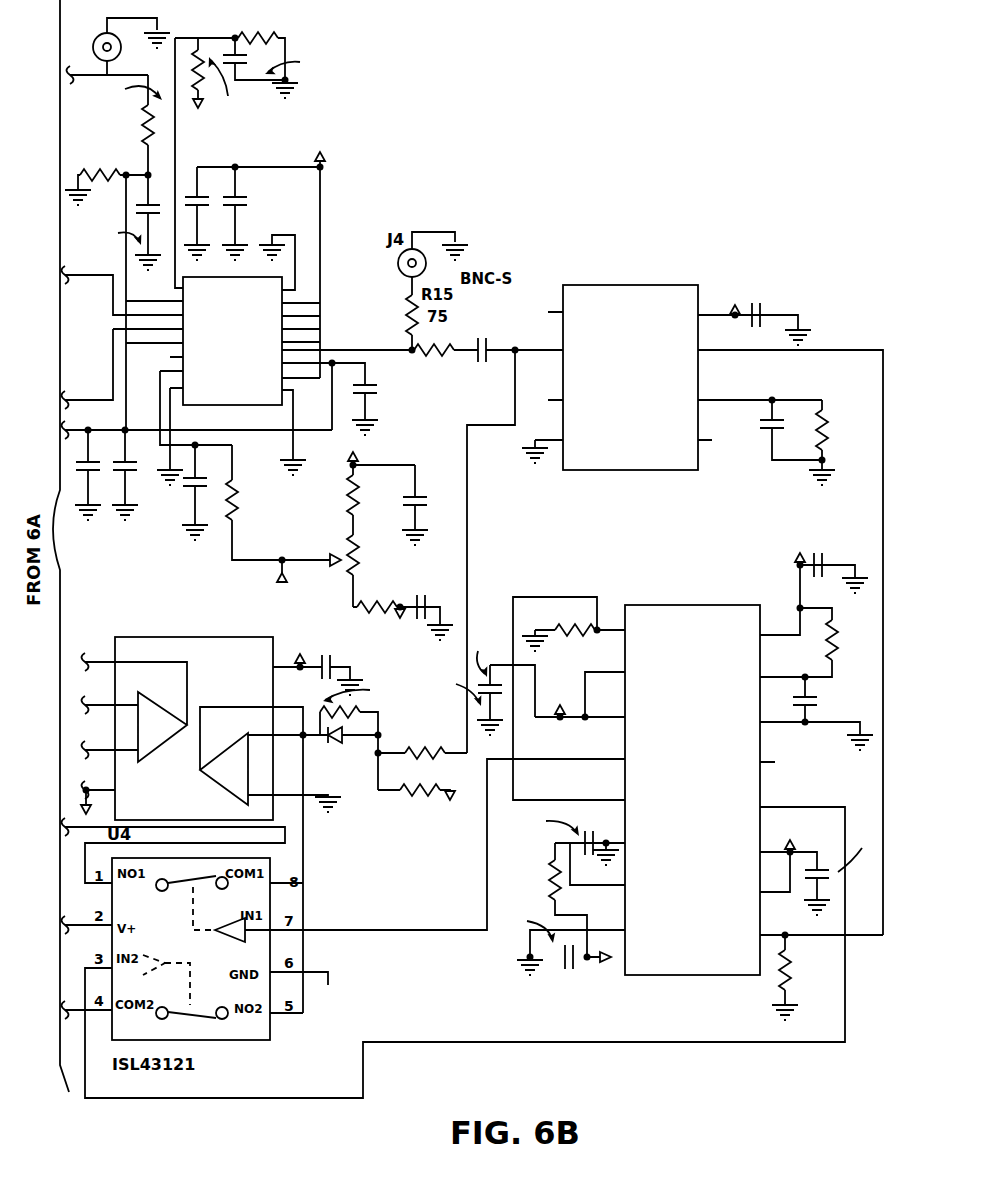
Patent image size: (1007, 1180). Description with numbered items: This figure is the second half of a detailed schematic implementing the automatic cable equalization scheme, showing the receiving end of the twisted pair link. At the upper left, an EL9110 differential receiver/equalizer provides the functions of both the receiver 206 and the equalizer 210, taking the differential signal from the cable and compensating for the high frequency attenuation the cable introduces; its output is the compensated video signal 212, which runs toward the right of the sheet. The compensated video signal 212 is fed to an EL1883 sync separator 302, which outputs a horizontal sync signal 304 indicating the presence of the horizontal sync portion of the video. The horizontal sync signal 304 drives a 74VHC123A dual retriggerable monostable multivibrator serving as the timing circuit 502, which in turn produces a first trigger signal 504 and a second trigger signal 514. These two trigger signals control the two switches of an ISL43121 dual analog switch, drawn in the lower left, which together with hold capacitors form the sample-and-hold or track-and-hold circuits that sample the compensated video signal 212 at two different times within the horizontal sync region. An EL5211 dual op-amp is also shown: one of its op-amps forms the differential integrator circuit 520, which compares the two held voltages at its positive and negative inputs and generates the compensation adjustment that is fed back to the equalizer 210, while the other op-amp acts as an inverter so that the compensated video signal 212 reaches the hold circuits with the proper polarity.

The receiver 206 is at (270, 333).
The equalizer 210 is at (362, 104).
The compensated video signal 212 is at (351, 345).
The sync separator 302 is at (642, 285).
The horizontal sync signal 304 is at (845, 350).
The timing circuit 502 is at (700, 605).
The first trigger signal 504 is at (418, 930).
The second trigger signal 514 is at (490, 1042).
The differential integrator circuit 520 is at (169, 681).